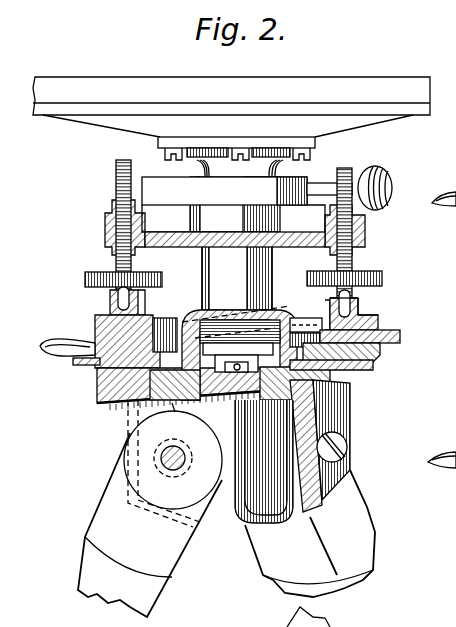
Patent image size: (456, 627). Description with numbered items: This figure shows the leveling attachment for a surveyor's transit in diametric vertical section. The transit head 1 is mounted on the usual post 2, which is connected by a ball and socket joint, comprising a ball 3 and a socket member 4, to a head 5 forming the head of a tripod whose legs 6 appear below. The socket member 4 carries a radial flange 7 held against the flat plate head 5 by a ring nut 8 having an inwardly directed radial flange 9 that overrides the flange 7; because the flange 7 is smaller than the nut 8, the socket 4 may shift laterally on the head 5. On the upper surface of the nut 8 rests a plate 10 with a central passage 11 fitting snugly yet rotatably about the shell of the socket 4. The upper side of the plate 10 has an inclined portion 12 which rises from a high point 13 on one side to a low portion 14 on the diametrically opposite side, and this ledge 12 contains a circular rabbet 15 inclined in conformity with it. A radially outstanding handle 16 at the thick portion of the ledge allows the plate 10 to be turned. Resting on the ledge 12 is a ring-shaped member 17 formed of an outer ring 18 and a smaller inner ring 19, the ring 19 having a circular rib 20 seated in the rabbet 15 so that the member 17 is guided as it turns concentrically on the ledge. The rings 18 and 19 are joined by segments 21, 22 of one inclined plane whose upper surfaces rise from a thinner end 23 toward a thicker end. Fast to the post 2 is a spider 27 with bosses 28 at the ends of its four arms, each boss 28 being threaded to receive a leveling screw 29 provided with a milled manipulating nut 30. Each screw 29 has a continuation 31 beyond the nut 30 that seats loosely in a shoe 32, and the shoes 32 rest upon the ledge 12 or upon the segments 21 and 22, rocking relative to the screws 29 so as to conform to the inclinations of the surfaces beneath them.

The transit head 1 is at (231, 107).
The post 2 is at (236, 235).
The ball 3 is at (432, 312).
The socket member 4 is at (274, 315).
The head 5 is at (118, 403).
The legs 6 is at (226, 508).
The radial flange 7 is at (162, 403).
The ring nut 8 is at (372, 378).
The inwardly directed radial flange 9 is at (152, 403).
The plate 10 is at (402, 343).
The central passage 11 is at (172, 403).
The inclined portion 12 is at (95, 356).
The high point 13 is at (107, 315).
The low portion 14 is at (378, 327).
The circular rabbet 15 is at (345, 356).
The handle 16 is at (44, 358).
The ring-shaped member 17 is at (380, 320).
The outer ring 18 is at (370, 315).
The inner ring 19 is at (316, 323).
The circular rib 20 is at (107, 368).
The inclined plane segment 21 is at (160, 318).
The inclined plane segment 22 is at (365, 312).
The end of segment 23 is at (277, 617).
The spider 27 is at (183, 240).
The bosses 28 is at (105, 222).
The leveling screw 29 is at (116, 186).
The manipulating head or nut 30 is at (95, 272).
The continuation 31 is at (118, 292).
The shoe 32 is at (140, 295).